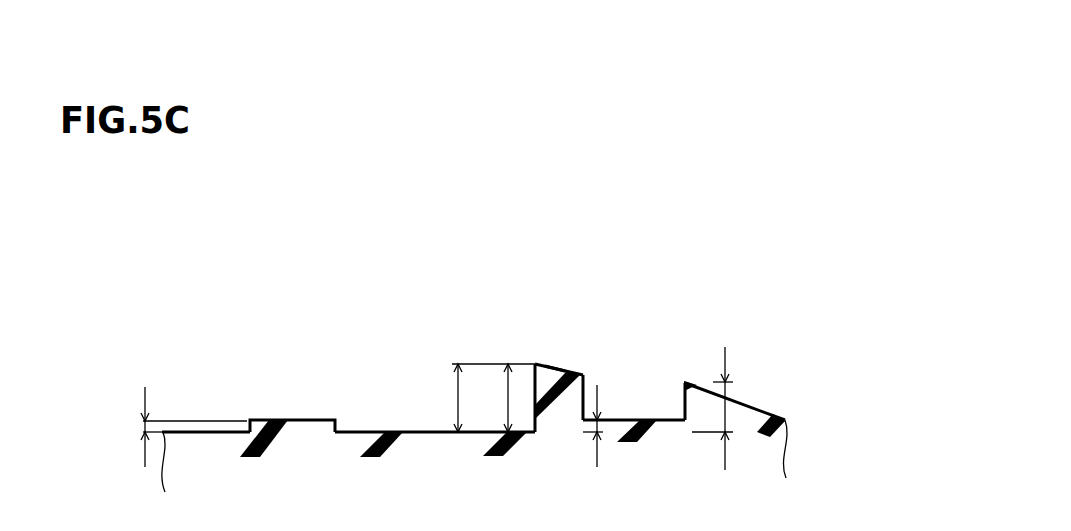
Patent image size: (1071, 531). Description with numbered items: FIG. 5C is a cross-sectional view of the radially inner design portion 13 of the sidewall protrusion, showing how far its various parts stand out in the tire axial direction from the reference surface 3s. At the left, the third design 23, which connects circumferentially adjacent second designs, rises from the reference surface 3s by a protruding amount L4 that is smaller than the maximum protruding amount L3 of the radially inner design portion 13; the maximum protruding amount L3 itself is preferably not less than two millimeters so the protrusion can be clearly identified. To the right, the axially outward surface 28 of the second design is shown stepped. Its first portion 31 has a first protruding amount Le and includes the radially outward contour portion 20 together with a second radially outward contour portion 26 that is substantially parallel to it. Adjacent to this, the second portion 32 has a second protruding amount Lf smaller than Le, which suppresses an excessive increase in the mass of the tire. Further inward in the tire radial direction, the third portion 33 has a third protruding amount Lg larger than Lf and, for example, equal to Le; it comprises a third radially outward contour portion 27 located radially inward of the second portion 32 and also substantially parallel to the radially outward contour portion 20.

The radially inner design portion 13 is at (718, 228).
The third design 23 is at (287, 397).
The reference surface 3s is at (368, 430).
The first portion 31 is at (525, 312).
The radially outward contour portion 20 is at (565, 368).
The axially outward surface 28 is at (553, 367).
The second radially outward contour portion 26 is at (585, 372).
The second portion 32 is at (638, 348).
The third radially outward contour portion 27 is at (683, 378).
The third portion 33 is at (740, 350).
The protruding amount of the third design L4 is at (175, 427).
The maximum protruding amount of the radially inner design portion L3 is at (458, 397).
The first protruding amount Le is at (508, 397).
The second protruding amount Lf is at (598, 427).
The third protruding amount Lg is at (727, 410).